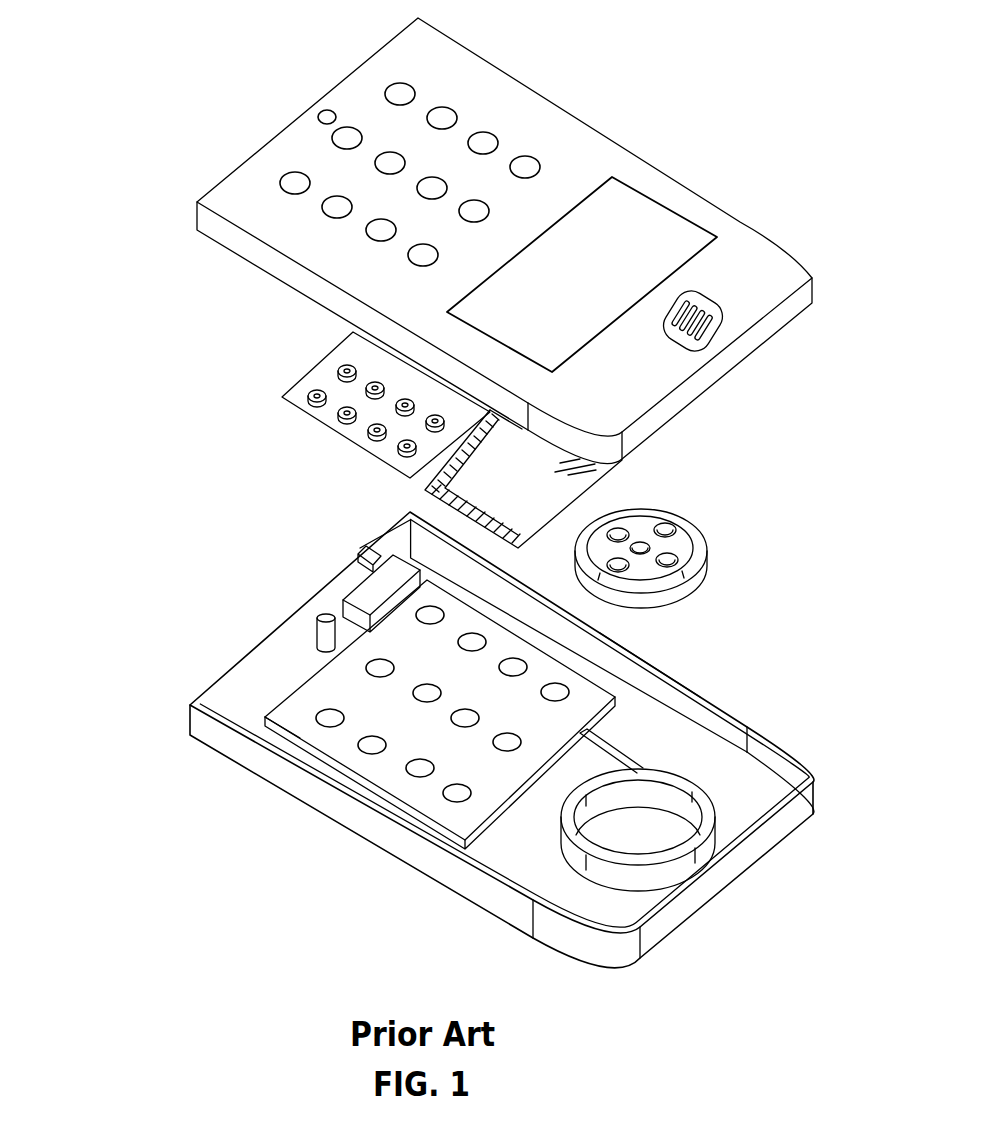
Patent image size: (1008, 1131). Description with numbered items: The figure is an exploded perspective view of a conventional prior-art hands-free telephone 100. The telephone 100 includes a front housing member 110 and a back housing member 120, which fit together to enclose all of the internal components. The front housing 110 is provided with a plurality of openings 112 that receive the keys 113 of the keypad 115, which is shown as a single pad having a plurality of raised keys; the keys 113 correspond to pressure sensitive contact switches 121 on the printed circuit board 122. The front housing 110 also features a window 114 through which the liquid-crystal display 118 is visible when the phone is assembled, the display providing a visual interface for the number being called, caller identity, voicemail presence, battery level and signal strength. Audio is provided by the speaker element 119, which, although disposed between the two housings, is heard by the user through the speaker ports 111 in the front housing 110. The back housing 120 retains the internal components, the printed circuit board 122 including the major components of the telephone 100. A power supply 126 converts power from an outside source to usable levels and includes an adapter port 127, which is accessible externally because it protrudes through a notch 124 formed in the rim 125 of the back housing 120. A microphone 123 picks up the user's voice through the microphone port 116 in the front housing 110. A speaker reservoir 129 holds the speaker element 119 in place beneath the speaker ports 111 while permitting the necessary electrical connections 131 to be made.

The hands-free telephone 100 is at (86, 280).
The front housing member 110 is at (612, 128).
The speaker ports 111 is at (708, 293).
The openings 112 is at (486, 104).
The keys 113 is at (329, 381).
The window 114 is at (653, 193).
The keypad 115 is at (320, 422).
The microphone port 116 is at (324, 109).
The liquid-crystal display 118 is at (616, 480).
The speaker element 119 is at (708, 568).
The back housing member 120 is at (347, 832).
The pressure sensitive contact switches 121 is at (352, 683).
The printed circuit board 122 is at (264, 718).
The microphone 123 is at (320, 633).
The notch 124 is at (372, 547).
The rim 125 is at (650, 648).
The power supply 126 is at (372, 593).
The adapter port 127 is at (356, 552).
The speaker reservoir 129 is at (550, 838).
The electrical connections 131 is at (612, 745).